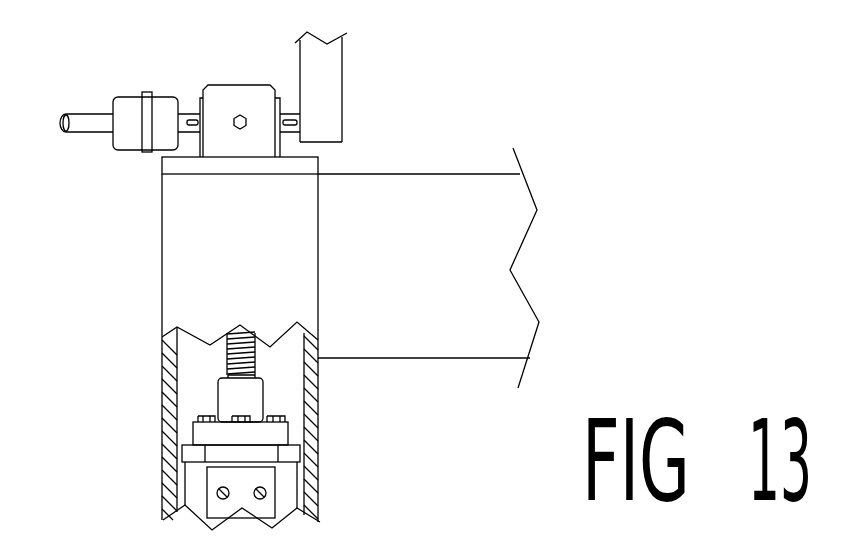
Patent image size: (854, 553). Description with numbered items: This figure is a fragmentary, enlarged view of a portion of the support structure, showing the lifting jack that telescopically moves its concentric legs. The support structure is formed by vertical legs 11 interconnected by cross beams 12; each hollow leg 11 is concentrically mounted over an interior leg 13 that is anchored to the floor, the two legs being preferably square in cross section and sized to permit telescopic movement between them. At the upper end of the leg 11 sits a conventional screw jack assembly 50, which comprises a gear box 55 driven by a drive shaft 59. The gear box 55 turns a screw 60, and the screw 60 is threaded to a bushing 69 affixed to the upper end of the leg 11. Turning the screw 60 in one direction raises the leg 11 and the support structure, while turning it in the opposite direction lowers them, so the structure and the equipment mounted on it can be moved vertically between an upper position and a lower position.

The vertical leg 11 is at (162, 187).
The cross beam 12 is at (408, 337).
The interior leg 13 is at (193, 487).
The screw jack assembly 50 is at (382, 62).
The gear box 55 is at (252, 103).
The drive shaft 59 is at (88, 120).
The screw 60 is at (227, 367).
The bushing 69 is at (230, 393).